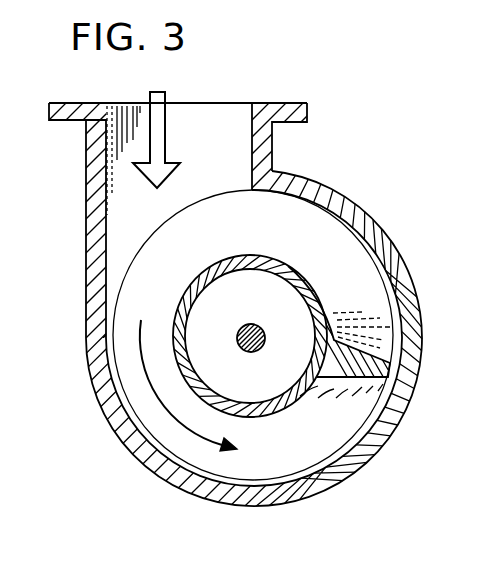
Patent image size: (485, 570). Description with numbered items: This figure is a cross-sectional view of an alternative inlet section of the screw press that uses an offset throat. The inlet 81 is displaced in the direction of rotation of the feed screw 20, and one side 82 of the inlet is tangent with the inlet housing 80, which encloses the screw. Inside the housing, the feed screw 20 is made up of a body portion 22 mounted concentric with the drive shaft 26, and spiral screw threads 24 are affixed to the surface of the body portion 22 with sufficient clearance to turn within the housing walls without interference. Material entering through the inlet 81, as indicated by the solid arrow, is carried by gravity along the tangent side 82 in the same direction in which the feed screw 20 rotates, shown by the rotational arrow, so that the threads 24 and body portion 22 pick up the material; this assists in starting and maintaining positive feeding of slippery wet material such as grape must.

The feed screw 20 is at (213, 187).
The body portion 22 is at (222, 267).
The spiral screw threads 24 is at (148, 243).
The drive shaft 26 is at (252, 325).
The inlet housing 80 is at (112, 427).
The inlet 81 is at (251, 124).
The side 82 is at (80, 224).